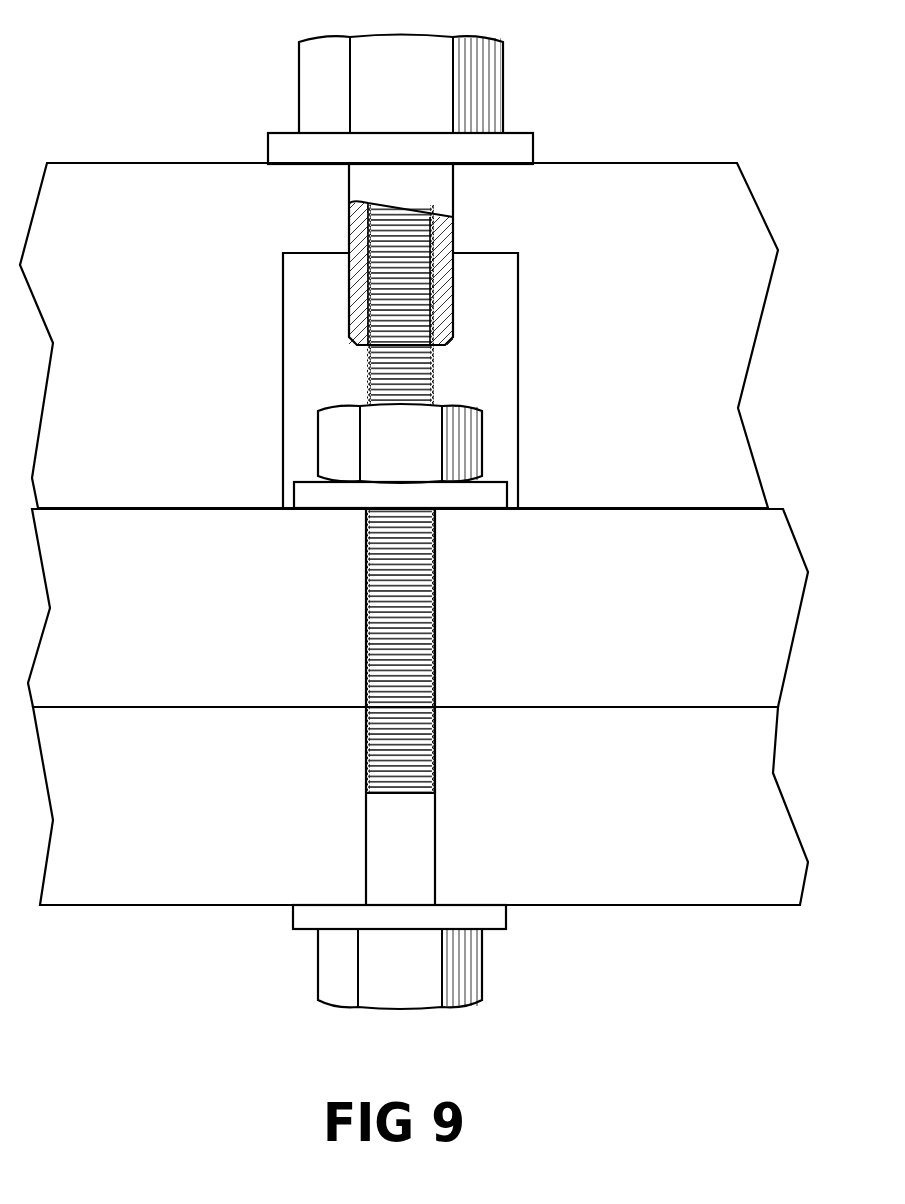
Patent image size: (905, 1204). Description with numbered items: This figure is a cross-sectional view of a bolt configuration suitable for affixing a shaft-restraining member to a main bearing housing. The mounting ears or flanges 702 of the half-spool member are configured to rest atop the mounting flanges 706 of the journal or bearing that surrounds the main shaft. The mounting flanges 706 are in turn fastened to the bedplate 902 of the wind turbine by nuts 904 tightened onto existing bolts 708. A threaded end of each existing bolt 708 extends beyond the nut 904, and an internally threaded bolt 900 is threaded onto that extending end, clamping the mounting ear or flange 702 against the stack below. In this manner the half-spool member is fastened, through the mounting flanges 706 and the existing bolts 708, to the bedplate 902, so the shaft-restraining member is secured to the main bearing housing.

The mounting ears or flanges 702 is at (168, 358).
The mounting flanges 706 is at (168, 628).
The bedplate 902 is at (168, 826).
The existing bolts 708 is at (397, 290).
The internally threaded bolts 900 is at (390, 180).
The nuts 904 is at (345, 415).